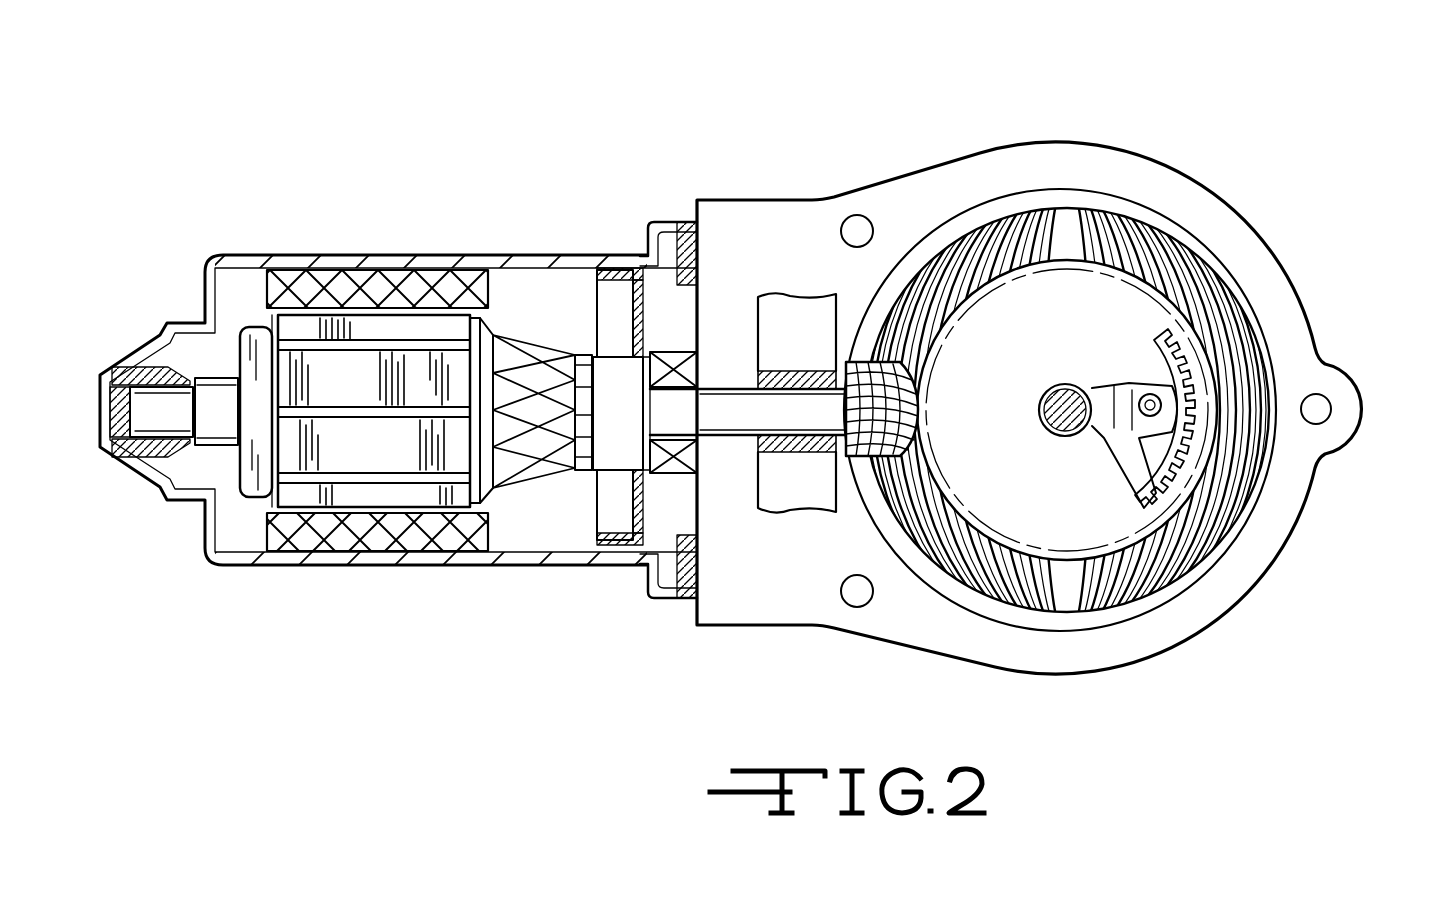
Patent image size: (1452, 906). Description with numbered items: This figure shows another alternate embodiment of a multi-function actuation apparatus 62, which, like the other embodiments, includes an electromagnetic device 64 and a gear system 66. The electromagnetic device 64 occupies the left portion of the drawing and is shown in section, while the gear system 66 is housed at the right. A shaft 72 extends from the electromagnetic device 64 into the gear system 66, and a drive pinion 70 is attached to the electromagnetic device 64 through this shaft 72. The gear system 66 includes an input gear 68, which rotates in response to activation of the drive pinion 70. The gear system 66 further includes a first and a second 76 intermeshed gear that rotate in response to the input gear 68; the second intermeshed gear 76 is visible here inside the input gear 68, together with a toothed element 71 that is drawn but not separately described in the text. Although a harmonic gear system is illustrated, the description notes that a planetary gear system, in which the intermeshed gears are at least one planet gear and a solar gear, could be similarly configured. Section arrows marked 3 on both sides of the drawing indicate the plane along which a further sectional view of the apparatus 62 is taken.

The multi-function actuation apparatus 62 is at (622, 166).
The electromagnetic device 64 is at (432, 574).
The gear system 66 is at (1208, 636).
The input gear 68 is at (1218, 500).
The drive pinion 70 is at (858, 362).
The toothed sector 71 is at (1180, 332).
The shaft 72 is at (742, 438).
The second intermeshed gear 76 is at (1195, 362).
The section line 3- 3 is at (752, 406).